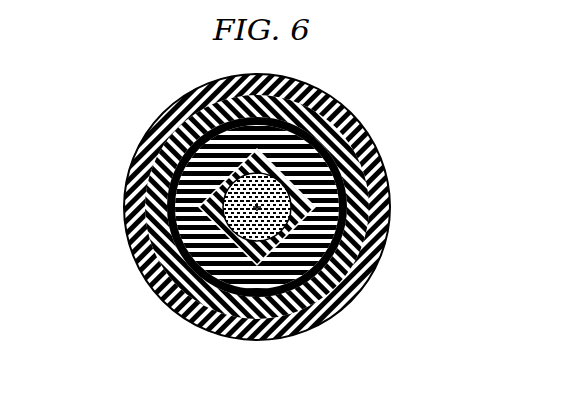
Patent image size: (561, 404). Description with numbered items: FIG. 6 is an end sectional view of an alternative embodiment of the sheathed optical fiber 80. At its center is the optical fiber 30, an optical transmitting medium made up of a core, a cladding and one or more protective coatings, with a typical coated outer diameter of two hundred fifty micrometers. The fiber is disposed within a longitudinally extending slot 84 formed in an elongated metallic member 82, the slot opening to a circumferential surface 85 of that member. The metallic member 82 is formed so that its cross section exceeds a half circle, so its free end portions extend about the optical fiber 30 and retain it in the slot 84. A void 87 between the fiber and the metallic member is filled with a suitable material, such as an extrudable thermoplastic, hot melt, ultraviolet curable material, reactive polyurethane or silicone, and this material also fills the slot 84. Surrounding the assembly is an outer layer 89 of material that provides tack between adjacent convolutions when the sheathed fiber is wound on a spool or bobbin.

The sheathed optical fiber 80 is at (444, 230).
The elongated metallic member 82 is at (357, 297).
The longitudinally extending slot 84 is at (341, 112).
The circumferential surface 85 is at (390, 190).
The void 87 is at (176, 107).
The outer layer 89 is at (182, 318).
The optical fiber 30 is at (134, 247).